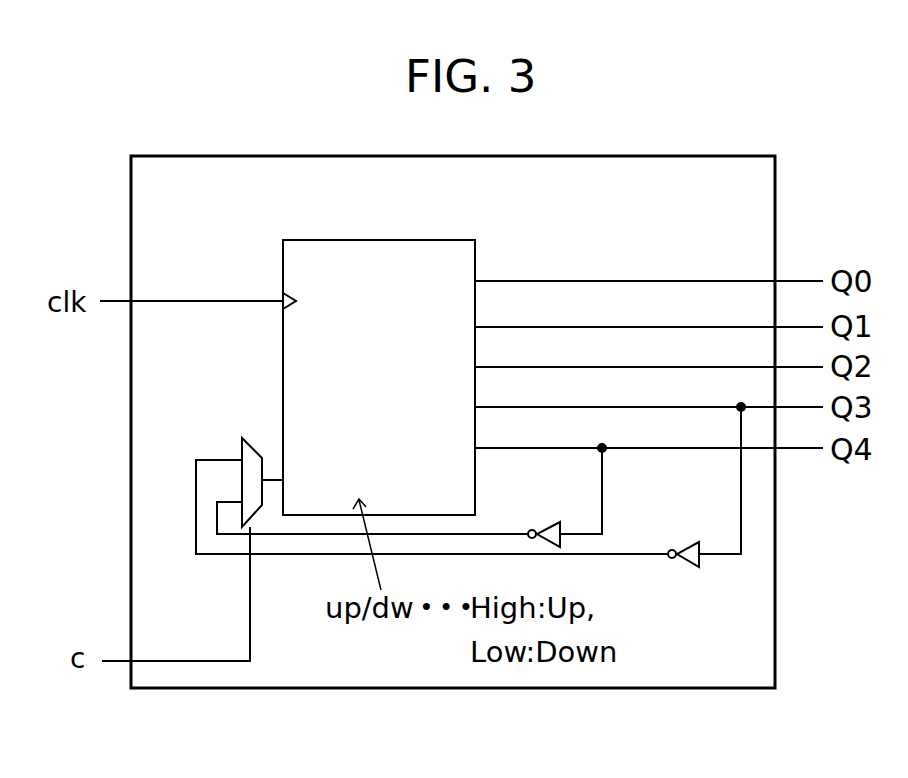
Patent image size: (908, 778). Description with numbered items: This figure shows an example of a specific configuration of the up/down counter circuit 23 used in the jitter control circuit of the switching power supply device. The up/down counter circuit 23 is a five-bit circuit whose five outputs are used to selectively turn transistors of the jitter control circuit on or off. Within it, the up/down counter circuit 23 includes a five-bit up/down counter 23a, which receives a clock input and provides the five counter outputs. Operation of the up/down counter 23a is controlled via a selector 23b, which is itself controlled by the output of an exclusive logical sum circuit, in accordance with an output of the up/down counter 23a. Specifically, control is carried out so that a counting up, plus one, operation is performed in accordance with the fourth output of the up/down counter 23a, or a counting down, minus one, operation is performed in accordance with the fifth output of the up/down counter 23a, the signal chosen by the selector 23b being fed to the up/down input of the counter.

The up/down counter circuit 23 is at (667, 156).
The up/down counter 23a is at (330, 240).
The selector 23b is at (242, 445).